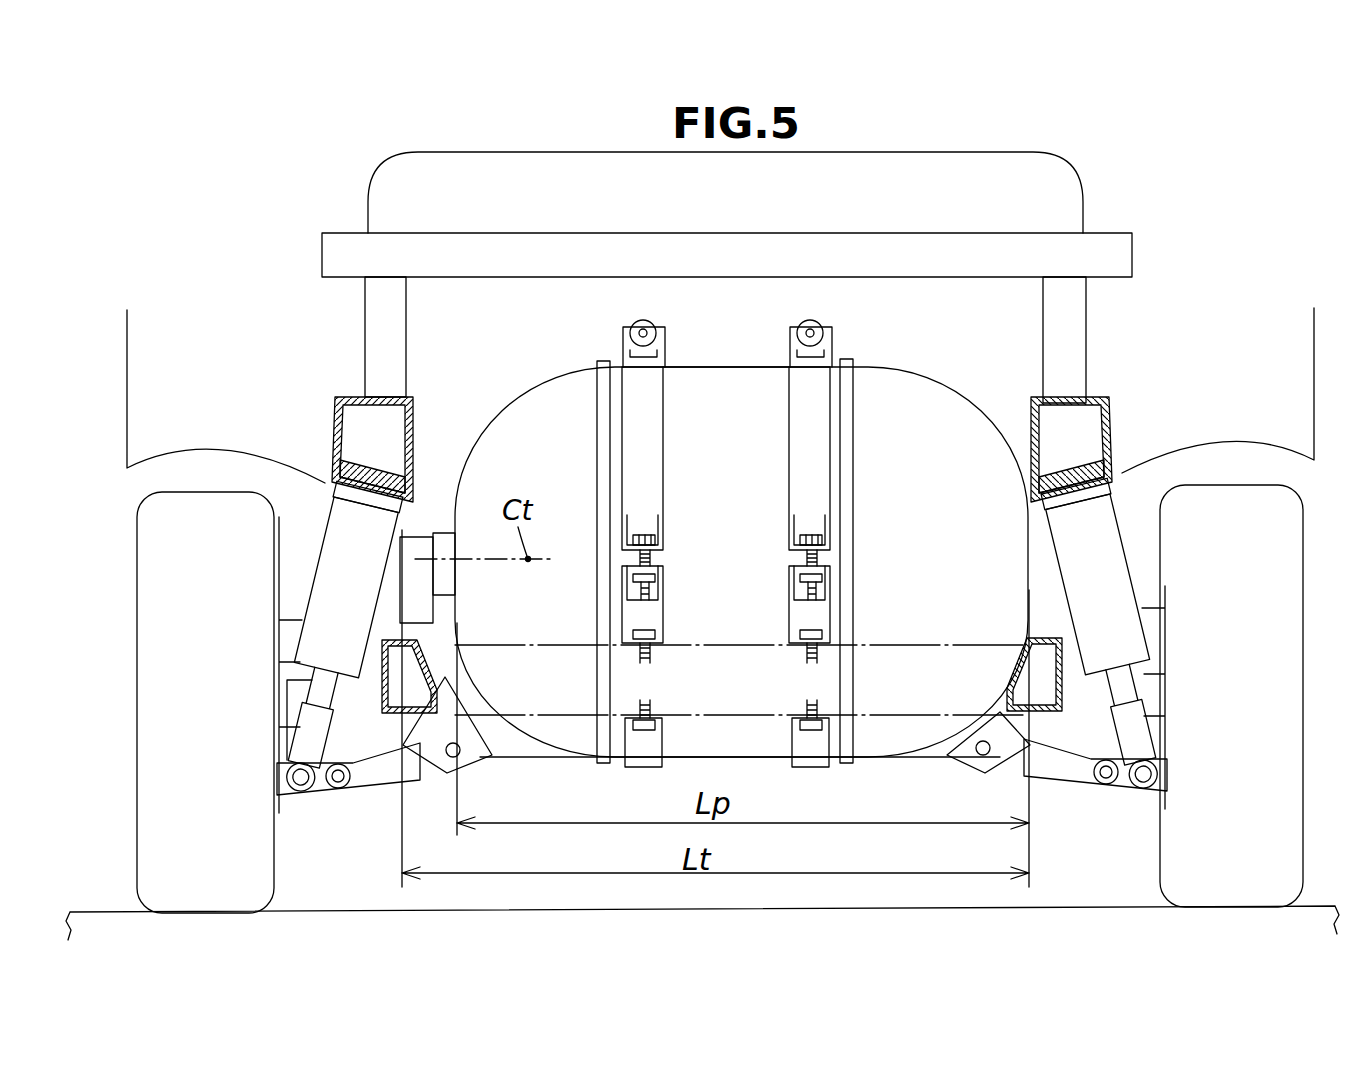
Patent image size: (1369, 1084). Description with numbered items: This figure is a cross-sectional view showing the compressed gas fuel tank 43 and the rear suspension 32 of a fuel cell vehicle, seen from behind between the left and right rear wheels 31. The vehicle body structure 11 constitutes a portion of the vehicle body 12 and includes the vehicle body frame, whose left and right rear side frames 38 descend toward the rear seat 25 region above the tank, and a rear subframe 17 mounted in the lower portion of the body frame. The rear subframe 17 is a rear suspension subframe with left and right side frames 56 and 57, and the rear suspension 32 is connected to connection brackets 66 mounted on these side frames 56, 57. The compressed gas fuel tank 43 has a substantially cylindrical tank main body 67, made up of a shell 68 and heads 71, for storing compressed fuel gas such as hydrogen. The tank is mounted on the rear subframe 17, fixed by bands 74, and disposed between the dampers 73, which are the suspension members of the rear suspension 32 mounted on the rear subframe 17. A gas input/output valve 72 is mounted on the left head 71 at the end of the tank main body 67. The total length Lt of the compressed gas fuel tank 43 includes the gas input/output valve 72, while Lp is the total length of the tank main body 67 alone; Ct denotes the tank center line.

The vehicle body structure 11 is at (154, 416).
The vehicle body 12 is at (204, 217).
The rear subframe 17 is at (366, 623).
The rear seat 25 is at (416, 132).
The rear wheels 31 is at (115, 569).
The rear suspension 32 is at (298, 511).
The rear side frames 38 is at (333, 410).
The compressed gas fuel tank 43 is at (569, 332).
The left side frame 56 is at (382, 660).
The right side frame 57 is at (1062, 648).
The connection brackets 66 is at (482, 765).
The tank main body 67 is at (683, 363).
The shell 68 is at (725, 365).
The heads 71 is at (505, 412).
The gas input/output valve 72 is at (417, 527).
The damper 73 is at (310, 535).
The bands 74 is at (668, 418).